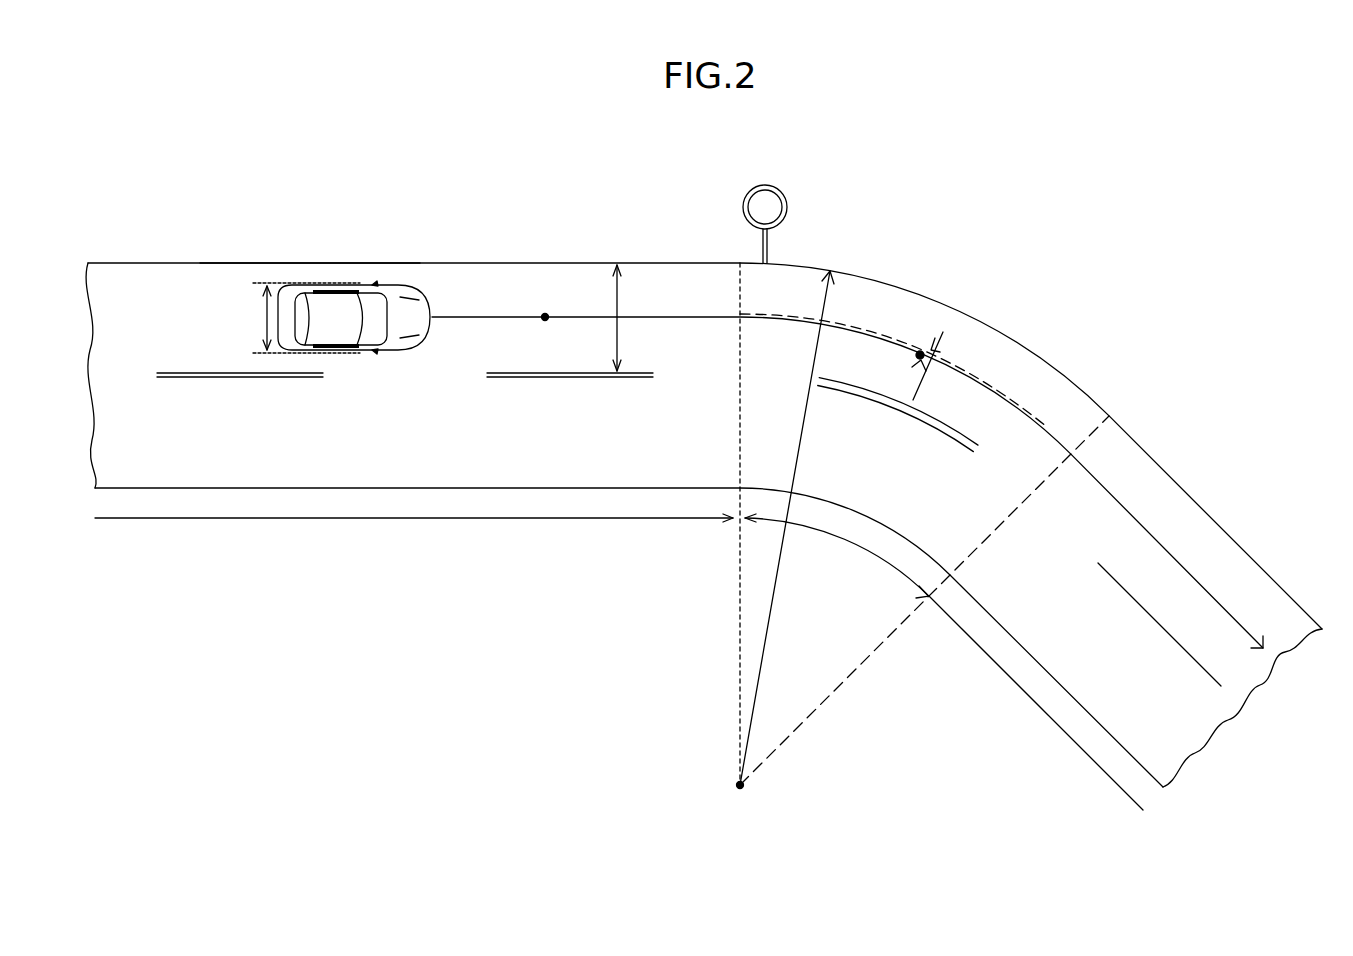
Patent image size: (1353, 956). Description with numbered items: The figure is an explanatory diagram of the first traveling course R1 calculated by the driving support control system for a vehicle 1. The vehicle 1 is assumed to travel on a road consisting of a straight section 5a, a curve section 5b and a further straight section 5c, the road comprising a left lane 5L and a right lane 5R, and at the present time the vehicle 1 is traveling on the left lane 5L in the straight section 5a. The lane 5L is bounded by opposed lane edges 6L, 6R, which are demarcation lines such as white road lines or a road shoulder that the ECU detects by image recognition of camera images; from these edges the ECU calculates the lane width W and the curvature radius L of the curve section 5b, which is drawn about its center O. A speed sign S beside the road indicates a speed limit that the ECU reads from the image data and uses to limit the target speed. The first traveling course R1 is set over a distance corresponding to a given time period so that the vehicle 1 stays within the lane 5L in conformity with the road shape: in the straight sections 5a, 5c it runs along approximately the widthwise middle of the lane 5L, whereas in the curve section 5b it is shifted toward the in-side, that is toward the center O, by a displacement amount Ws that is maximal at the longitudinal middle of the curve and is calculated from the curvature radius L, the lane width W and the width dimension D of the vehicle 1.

The vehicle 1 is at (346, 300).
The left lane 5L is at (1247, 588).
The right lane 5R is at (1163, 725).
The straight section 5a is at (414, 532).
The curve section 5b is at (837, 556).
The straight section 5c is at (1036, 703).
The lane edge 6L is at (279, 262).
The lane edge 6R is at (292, 383).
The first traveling course R1 is at (1143, 525).
The speed sign S is at (765, 185).
The center of curvature radius O is at (739, 543).
The curvature radius L is at (787, 528).
The lane width W is at (626, 318).
The width dimension of the vehicle D is at (302, 318).
The displacement amount Ws is at (943, 366).